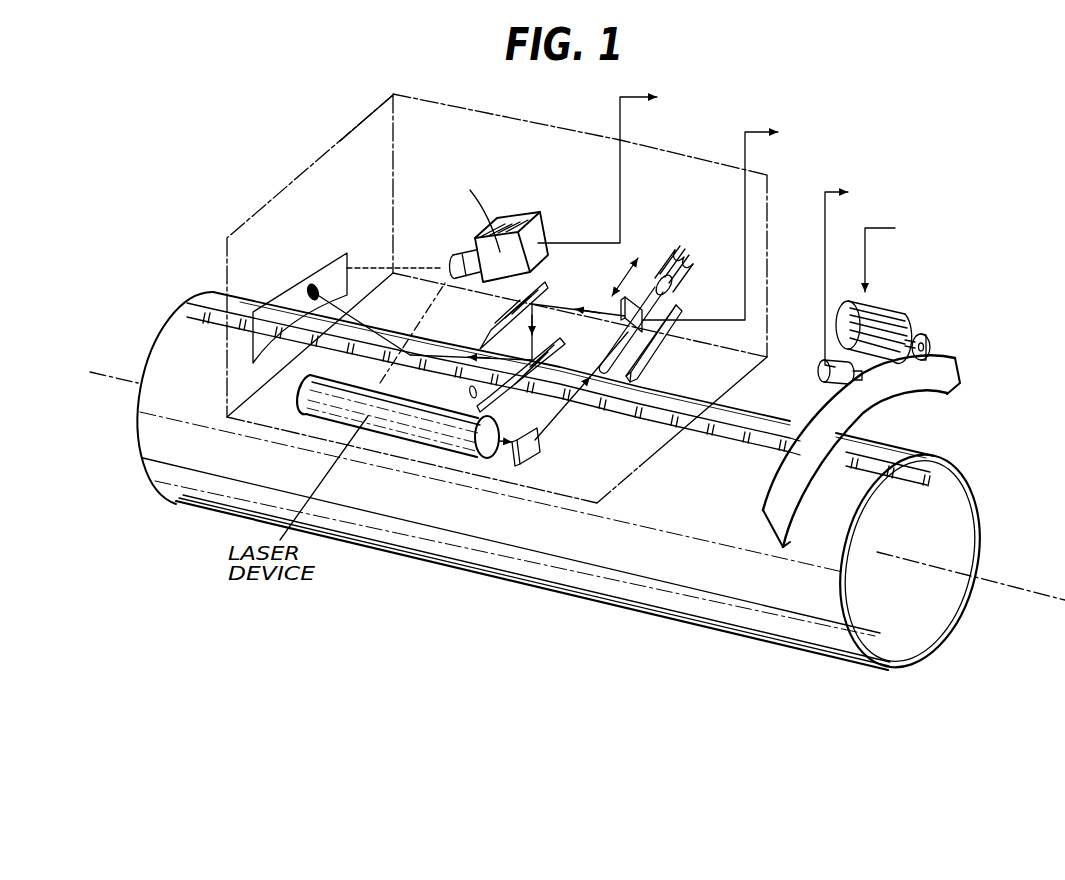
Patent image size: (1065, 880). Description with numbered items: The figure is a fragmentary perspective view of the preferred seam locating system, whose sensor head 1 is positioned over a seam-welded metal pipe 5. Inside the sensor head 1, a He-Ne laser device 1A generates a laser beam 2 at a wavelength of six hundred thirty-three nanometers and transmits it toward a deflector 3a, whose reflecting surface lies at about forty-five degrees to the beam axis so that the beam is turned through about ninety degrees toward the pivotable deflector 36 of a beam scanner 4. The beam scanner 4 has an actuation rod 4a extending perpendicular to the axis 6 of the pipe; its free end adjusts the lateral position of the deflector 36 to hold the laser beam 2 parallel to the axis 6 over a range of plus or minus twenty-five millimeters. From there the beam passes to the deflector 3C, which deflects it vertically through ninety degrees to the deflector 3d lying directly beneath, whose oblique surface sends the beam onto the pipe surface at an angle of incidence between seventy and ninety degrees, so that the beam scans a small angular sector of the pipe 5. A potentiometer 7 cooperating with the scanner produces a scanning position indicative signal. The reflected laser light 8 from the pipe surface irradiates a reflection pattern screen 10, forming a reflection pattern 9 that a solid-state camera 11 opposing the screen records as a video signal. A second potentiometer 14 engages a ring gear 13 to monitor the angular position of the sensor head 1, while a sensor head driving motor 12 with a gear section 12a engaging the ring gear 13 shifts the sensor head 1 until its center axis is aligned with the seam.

The sensor head 1 is at (658, 157).
The laser device 1A is at (397, 439).
The laser beam 2 is at (500, 440).
The deflector 3a is at (540, 446).
The deflector 3C is at (545, 285).
The deflector 3d is at (518, 388).
The deflector 36 is at (640, 300).
The beam scanner 4 is at (697, 253).
The actuation rod 4a is at (676, 288).
The seam-welded metal pipe 5 is at (660, 603).
The axis 6 is at (1050, 594).
The potentiometer 7 is at (660, 332).
The reflected laser light 8 is at (392, 342).
The reflection pattern 9 is at (306, 287).
The reflection pattern screen 10 is at (333, 267).
The solid-state camera 11 is at (533, 228).
The sensor head driving motor 12 is at (882, 317).
The gear section 12a is at (930, 336).
The ring gear 13 is at (944, 372).
The potentiometer 14 is at (820, 382).